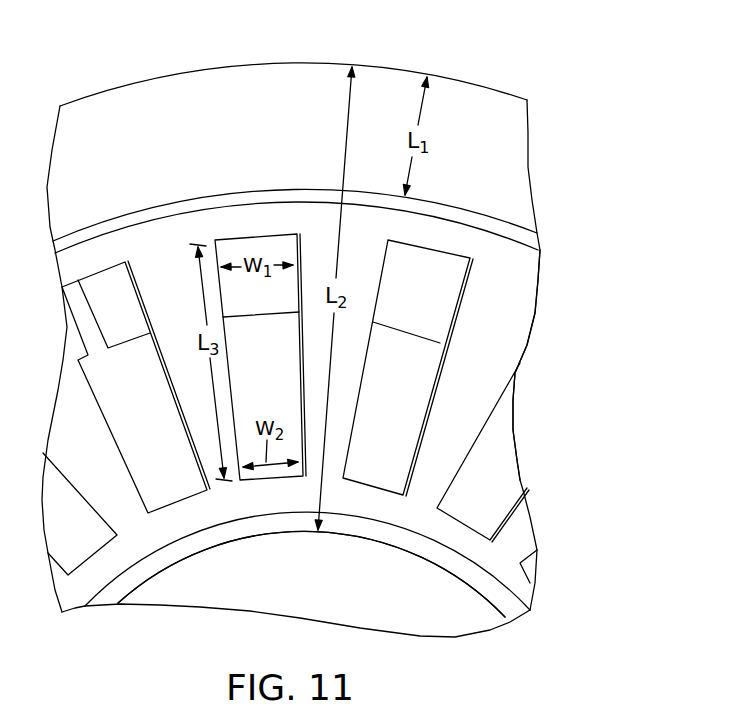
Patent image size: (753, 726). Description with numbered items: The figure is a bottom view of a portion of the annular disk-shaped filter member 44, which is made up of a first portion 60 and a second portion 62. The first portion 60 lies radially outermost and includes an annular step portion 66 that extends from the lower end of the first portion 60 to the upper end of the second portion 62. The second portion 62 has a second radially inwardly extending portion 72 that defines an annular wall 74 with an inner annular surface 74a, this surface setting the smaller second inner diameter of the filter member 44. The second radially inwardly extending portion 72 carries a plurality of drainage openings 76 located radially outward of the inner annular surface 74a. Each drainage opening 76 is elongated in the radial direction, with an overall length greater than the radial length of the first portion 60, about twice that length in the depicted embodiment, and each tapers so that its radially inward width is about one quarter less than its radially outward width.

The filter member 44 is at (500, 45).
The first portion 60 is at (207, 68).
The second portion 62 is at (118, 223).
The annular step portion 66 is at (156, 118).
The second radially inwardly extending portion 72 is at (490, 322).
The annular wall 74 is at (383, 536).
The inner annular surface 74a is at (262, 535).
The drainage openings 76 is at (125, 457).